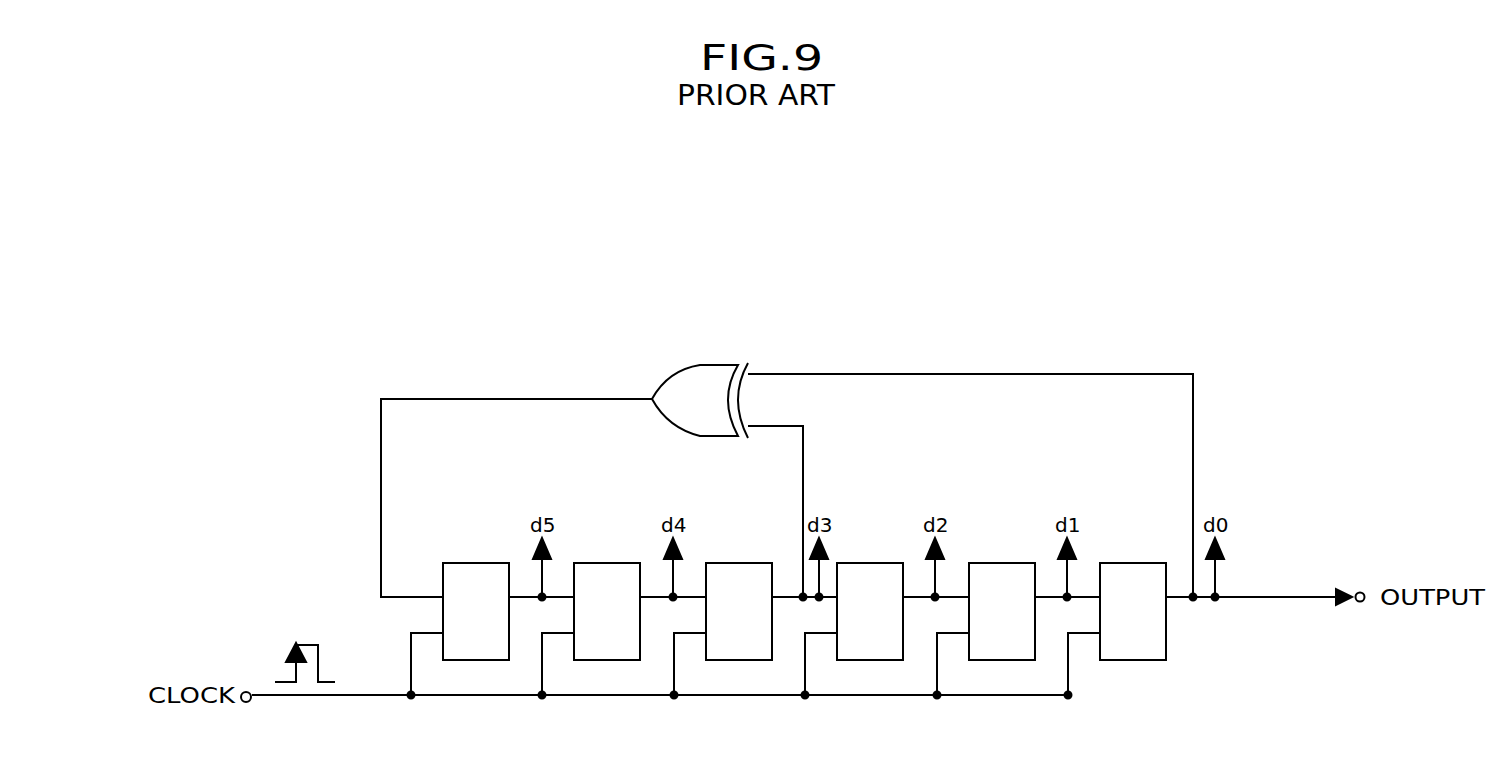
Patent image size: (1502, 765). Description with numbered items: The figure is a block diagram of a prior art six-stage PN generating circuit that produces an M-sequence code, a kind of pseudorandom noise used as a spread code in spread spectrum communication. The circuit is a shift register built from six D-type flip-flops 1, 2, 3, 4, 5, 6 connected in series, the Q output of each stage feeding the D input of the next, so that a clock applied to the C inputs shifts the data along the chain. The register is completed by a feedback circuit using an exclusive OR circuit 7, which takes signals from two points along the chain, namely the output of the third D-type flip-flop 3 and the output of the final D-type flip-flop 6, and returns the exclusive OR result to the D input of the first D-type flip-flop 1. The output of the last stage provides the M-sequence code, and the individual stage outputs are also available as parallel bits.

The D-type flip-flop 1 is at (466, 568).
The D-type flip-flop 2 is at (597, 568).
The D-type flip-flop 3 is at (729, 568).
The D-type flip-flop 4 is at (860, 568).
The D-type flip-flop 5 is at (992, 568).
The D-type flip-flop 6 is at (1123, 568).
The exclusive OR circuit 7 is at (686, 378).